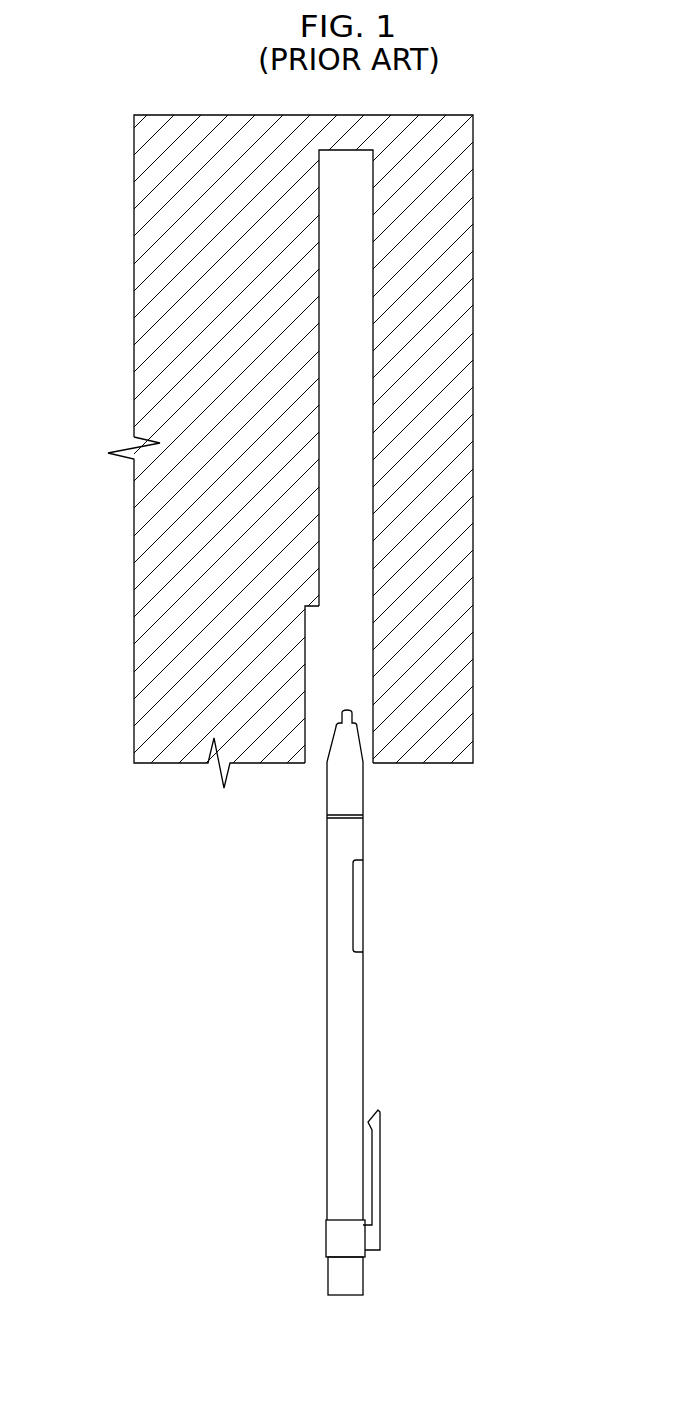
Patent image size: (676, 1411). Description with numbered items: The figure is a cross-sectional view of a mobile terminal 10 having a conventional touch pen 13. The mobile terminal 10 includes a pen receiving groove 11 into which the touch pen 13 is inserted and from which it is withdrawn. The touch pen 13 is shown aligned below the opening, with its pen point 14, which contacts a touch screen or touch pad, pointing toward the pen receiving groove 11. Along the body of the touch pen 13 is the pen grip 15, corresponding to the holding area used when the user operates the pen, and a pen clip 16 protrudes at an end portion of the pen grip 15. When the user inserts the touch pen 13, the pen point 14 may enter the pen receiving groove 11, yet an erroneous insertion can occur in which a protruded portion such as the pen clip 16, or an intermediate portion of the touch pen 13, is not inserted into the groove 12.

The mobile terminal 10 is at (427, 252).
The pen receiving groove 11 is at (348, 507).
The groove 12 is at (305, 692).
The touch pen 13 is at (428, 1002).
The pen point 14 is at (352, 718).
The pen grip 15 is at (360, 905).
The pen clip 16 is at (419, 1180).